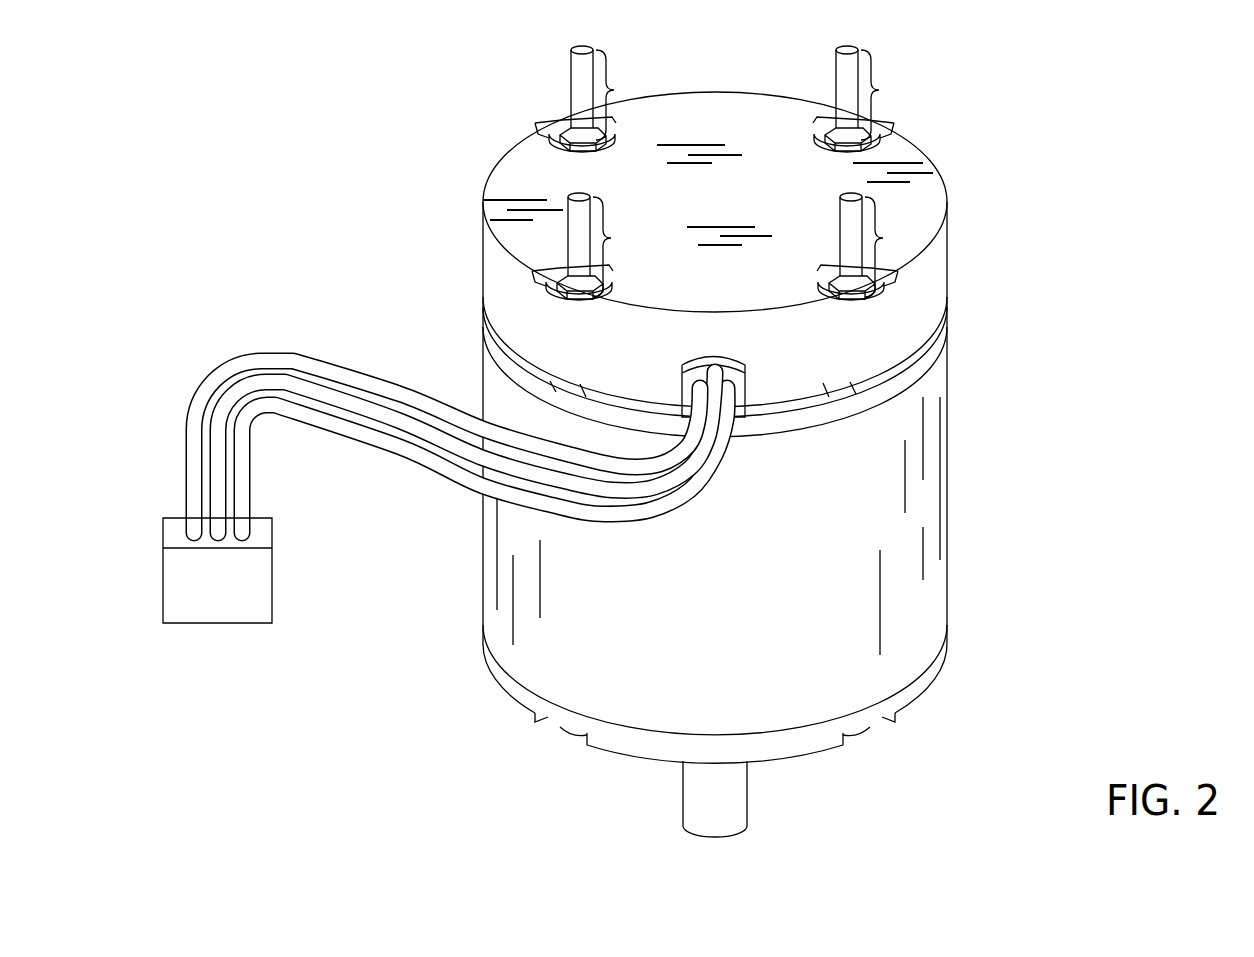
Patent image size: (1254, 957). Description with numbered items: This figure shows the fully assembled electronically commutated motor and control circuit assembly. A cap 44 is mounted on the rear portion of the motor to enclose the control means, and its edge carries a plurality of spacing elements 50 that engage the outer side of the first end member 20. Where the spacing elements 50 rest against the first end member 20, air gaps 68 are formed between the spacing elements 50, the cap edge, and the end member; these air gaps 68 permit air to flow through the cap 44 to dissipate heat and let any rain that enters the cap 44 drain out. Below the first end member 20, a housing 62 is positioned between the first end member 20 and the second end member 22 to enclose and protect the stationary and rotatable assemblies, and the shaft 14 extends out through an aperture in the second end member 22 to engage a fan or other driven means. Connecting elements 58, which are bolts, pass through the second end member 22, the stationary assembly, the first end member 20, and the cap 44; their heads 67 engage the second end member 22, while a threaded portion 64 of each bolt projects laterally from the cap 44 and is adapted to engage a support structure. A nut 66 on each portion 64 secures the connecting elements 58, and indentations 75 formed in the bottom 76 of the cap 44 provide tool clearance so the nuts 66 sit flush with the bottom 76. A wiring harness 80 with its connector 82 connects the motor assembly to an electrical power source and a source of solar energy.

The shaft 14 is at (730, 800).
The first end member 20 is at (930, 343).
The second end member 22 is at (930, 680).
The cap 44 is at (930, 279).
The spacing elements 50 is at (895, 390).
The connecting elements 58 is at (574, 86).
The housing 62 is at (925, 520).
The portion 64 is at (754, 173).
The nut 66 is at (563, 130).
The head 67 is at (565, 728).
The air gaps 68 is at (922, 440).
The indentations 75 is at (560, 143).
The bottom 76 is at (497, 188).
The wiring harness 80 is at (290, 372).
The connector 82 is at (196, 610).